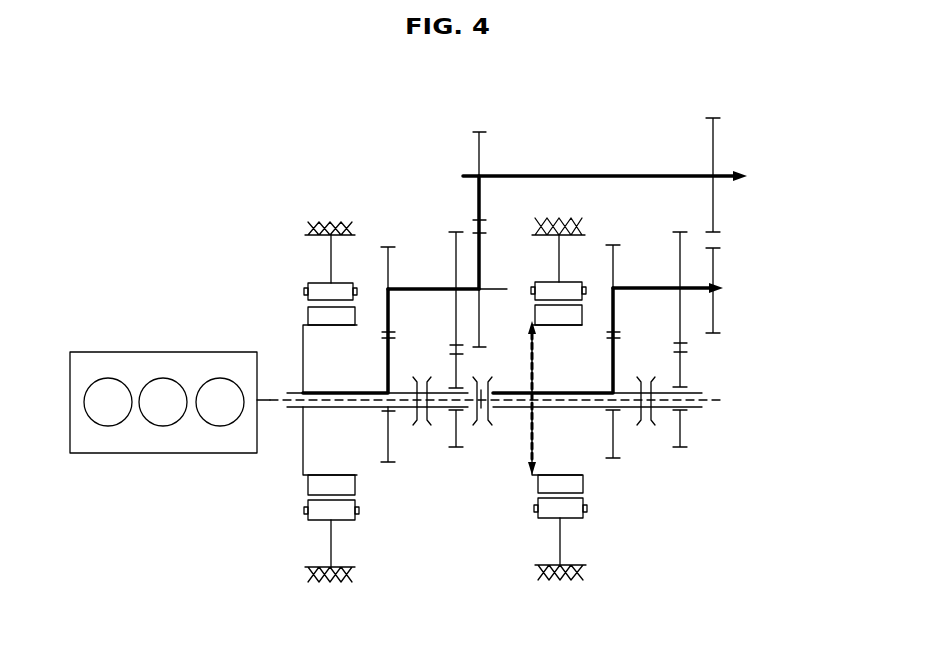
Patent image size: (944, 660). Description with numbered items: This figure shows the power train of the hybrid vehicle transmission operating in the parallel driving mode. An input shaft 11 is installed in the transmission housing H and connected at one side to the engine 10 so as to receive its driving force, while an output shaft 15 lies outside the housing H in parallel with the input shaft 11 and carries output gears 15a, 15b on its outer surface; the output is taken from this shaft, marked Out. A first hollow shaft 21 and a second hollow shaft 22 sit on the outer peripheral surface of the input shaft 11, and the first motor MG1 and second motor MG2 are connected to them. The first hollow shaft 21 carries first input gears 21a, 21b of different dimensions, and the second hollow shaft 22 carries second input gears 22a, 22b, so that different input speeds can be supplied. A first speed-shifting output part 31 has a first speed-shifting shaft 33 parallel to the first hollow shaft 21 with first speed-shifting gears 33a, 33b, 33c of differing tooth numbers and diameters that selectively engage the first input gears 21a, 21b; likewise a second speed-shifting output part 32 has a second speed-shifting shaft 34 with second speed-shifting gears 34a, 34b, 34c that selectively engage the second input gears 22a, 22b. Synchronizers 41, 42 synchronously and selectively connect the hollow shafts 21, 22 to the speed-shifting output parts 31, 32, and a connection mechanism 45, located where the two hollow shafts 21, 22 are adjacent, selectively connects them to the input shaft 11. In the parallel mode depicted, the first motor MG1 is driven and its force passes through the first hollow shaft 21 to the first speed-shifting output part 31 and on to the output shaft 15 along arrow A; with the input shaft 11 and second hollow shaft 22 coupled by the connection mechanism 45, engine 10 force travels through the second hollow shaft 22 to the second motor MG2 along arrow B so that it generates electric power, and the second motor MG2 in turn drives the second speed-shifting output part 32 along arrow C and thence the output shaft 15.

The engine 10 is at (160, 352).
The input shaft 11 is at (277, 403).
The output shaft 15 is at (611, 175).
The output gear 15a is at (481, 153).
The output gear 15b is at (714, 130).
The first hollow shaft 21 is at (350, 410).
The first input gear 21a is at (388, 363).
The first input gear 21b is at (457, 370).
The second hollow shaft 22 is at (585, 408).
The second input gear 22a is at (613, 365).
The second input gear 22b is at (683, 370).
The first speed-shifting output part 31 is at (420, 250).
The second speed-shifting output part 32 is at (646, 258).
The first speed-shifting shaft 33 is at (424, 292).
The first speed-shifting gear 33a is at (380, 258).
The first speed-shifting gear 33b is at (455, 258).
The first speed-shifting gear 33c is at (480, 264).
The second speed-shifting shaft 34 is at (645, 290).
The second speed-shifting gear 34a is at (613, 277).
The second speed-shifting gear 34b is at (680, 260).
The second speed-shifting gear 34c is at (714, 270).
The synchronizer 41 is at (422, 438).
The synchronizer 42 is at (644, 438).
The connection mechanism 45 is at (484, 438).
The first motor MG1 is at (290, 310).
The second motor MG2 is at (533, 533).
The arrow A is at (679, 175).
The arrow B is at (534, 440).
The arrow C is at (714, 275).
The transmission housing H is at (308, 229).
The output Out is at (772, 178).